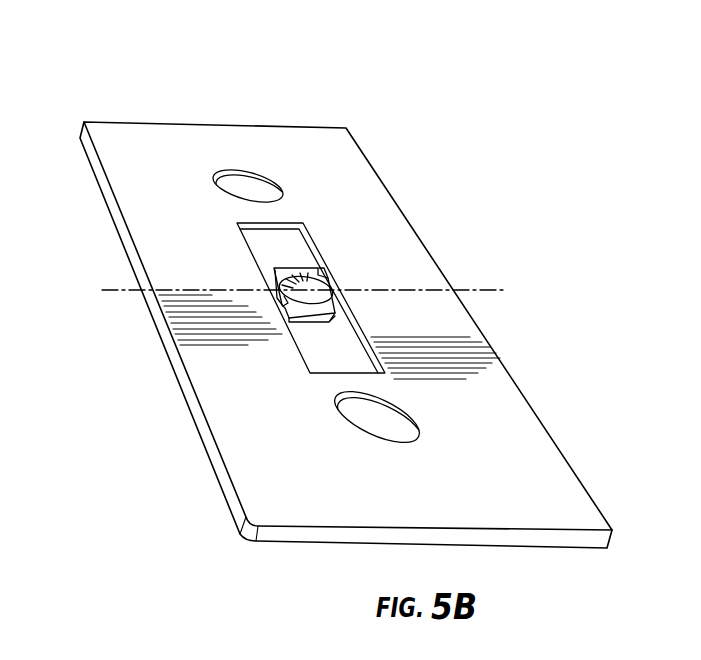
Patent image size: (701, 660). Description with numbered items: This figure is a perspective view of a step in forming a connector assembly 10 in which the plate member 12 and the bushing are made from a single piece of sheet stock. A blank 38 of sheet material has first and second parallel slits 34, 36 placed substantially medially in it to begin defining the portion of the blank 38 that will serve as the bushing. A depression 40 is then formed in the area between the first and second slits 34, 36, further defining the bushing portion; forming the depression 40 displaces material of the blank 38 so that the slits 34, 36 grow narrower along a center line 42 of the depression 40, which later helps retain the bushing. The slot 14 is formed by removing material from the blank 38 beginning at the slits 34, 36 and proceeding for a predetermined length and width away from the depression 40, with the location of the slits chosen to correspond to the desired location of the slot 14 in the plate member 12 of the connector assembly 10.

The connector assembly 10 is at (128, 86).
The plate member 12 is at (298, 130).
The slot 14 is at (268, 238).
The first slit 34 is at (282, 306).
The second slit 36 is at (335, 283).
The blank 38 is at (323, 505).
The depression 40 is at (298, 276).
The center line 42 is at (190, 289).